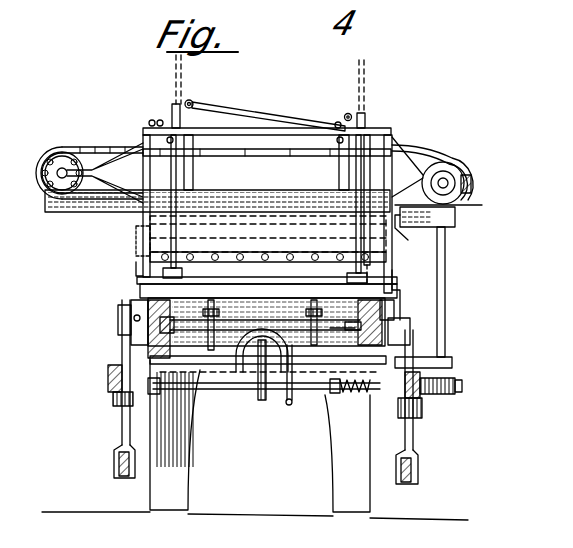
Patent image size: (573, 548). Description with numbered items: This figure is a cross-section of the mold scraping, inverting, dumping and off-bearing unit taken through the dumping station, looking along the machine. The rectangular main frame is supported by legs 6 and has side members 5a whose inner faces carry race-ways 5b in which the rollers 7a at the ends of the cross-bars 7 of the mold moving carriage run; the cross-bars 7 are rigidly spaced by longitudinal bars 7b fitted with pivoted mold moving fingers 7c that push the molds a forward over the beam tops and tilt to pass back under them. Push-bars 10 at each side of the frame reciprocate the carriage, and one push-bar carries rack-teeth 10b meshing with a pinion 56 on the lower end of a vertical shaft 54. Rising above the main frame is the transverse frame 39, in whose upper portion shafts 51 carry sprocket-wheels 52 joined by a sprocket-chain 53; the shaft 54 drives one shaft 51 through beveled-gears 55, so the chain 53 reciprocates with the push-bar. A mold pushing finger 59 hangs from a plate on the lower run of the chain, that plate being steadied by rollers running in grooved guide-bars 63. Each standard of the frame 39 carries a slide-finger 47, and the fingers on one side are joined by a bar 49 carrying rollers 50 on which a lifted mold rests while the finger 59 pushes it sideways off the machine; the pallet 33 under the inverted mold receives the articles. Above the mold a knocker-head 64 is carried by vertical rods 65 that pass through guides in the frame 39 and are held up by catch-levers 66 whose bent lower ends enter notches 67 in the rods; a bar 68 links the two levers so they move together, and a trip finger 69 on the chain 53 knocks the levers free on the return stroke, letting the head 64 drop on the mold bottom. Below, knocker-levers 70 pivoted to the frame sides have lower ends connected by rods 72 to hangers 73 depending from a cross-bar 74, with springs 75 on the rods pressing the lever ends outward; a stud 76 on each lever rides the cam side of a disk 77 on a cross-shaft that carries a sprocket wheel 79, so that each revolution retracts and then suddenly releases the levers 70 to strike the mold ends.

The vertical rods 65 is at (172, 112).
The bar 68 is at (250, 115).
The catch-levers 66 is at (194, 175).
The trip finger 69 is at (371, 210).
The notch 67 is at (177, 246).
The sprocket-wheels 52 is at (62, 160).
The sprocket-chain 53 is at (103, 147).
The shaft 51 is at (42, 185).
The guide-bars 63 is at (107, 205).
The frame 39 is at (145, 240).
The bar 49 is at (228, 260).
The rollers 50 is at (265, 247).
The beveled-gears 55 is at (471, 186).
The mold pushing finger 59 is at (406, 232).
The vertical shaft 54 is at (446, 277).
The slide-finger 47 is at (140, 268).
The knocker-head 64 is at (266, 283).
The rollers 7a is at (164, 308).
The molds a is at (187, 297).
The mold moving fingers 7c is at (330, 309).
The longitudinal bars 7b is at (260, 332).
The pallets 33 is at (315, 308).
The race-ways 5b is at (381, 302).
The cross-bars 7 is at (342, 341).
The cross-bar 74 is at (263, 350).
The sprocket wheel 79 is at (260, 402).
The hangers 73 is at (288, 404).
The rods 72 is at (206, 393).
The springs 75 is at (360, 397).
The knocker-levers 70 is at (118, 312).
The side members 5a is at (150, 335).
The disk 77 is at (122, 357).
The stud 76 is at (112, 388).
The rack-teeth 10b is at (420, 390).
The push-bars 10 is at (416, 415).
The pinion 56 is at (462, 388).
The legs 6 is at (255, 440).